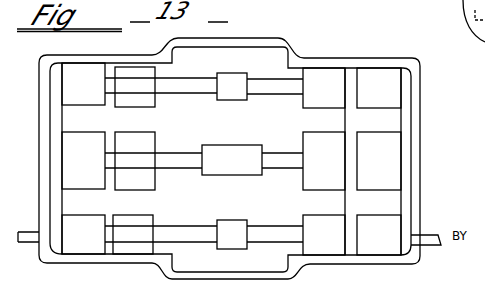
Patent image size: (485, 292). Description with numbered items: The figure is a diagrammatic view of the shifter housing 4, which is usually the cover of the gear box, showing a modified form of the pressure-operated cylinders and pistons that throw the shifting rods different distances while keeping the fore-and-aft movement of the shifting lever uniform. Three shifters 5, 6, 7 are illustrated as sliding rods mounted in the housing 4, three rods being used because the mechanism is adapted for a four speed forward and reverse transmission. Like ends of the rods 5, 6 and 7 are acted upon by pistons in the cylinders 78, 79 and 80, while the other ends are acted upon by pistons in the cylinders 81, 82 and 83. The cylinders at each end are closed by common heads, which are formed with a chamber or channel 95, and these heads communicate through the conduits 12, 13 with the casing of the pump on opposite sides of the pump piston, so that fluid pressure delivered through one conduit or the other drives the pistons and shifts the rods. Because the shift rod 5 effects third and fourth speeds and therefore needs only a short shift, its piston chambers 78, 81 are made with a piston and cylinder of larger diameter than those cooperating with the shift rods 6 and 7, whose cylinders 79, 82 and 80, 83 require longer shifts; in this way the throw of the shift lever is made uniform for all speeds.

The housing 4 is at (306, 52).
The chamber or channel 95 is at (50, 72).
The cylinder 80 is at (83, 84).
The cylinder 78 is at (83, 160).
The cylinder 79 is at (83, 234).
The cylinder 83 is at (378, 88).
The cylinder 81 is at (375, 157).
The cylinder 82 is at (382, 232).
The shifter 7 is at (195, 88).
The shifter 5 is at (189, 162).
The shifter 6 is at (196, 236).
The conduit 12 is at (26, 243).
The conduit 13 is at (427, 237).